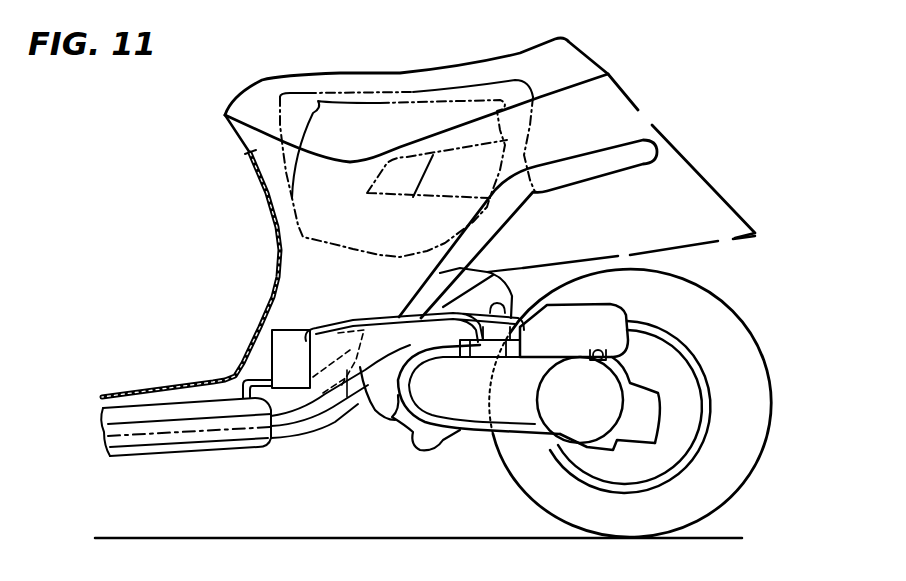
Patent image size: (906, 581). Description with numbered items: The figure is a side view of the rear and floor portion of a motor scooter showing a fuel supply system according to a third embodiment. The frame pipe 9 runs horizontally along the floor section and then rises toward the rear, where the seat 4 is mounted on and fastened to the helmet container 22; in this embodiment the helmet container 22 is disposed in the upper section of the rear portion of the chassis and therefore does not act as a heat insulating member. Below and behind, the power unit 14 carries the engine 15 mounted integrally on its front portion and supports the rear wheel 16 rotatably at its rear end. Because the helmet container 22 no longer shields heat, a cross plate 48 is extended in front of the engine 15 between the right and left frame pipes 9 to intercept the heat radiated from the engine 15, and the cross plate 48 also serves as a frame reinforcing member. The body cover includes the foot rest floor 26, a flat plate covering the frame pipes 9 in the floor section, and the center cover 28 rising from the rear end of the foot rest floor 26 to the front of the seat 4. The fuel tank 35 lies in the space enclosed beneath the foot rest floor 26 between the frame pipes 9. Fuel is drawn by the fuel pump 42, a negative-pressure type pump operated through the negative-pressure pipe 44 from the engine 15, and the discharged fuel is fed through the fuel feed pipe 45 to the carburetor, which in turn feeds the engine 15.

The seat 4 is at (305, 72).
The helmet container 22 is at (368, 100).
The center cover 28 is at (273, 238).
The frame pipe 9 is at (400, 287).
The fuel feed pipe 45 is at (333, 322).
The fuel pump 42 is at (294, 330).
The cross plate 48 is at (338, 326).
The foot rest floor 26 is at (148, 390).
The fuel tank 35 is at (190, 412).
The negative-pressure pipe 44 is at (357, 363).
The power unit 14 is at (467, 410).
The engine 15 is at (574, 330).
The rear wheel 16 is at (748, 448).